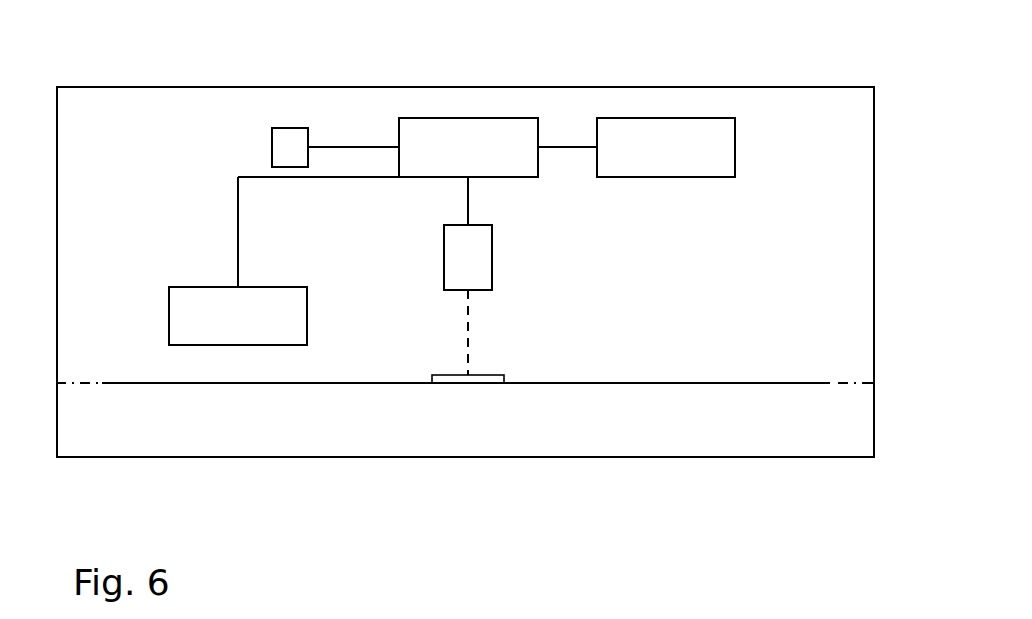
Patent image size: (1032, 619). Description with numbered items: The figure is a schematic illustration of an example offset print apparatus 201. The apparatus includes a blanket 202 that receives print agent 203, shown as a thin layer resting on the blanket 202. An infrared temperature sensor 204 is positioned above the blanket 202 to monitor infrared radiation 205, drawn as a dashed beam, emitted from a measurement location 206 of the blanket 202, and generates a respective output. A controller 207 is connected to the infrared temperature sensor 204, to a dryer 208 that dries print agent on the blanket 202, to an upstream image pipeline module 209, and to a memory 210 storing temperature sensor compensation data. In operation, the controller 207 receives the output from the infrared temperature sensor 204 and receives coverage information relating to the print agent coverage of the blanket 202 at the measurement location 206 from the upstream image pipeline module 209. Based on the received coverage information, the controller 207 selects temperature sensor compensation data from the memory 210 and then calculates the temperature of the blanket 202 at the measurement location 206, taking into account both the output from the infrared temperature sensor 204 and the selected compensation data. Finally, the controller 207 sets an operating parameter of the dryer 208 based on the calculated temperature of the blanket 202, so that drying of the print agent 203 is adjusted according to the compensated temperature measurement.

The offset print apparatus 201 is at (678, 87).
The blanket 202 is at (640, 383).
The print agent 203 is at (502, 375).
The infrared temperature sensor 204 is at (493, 256).
The infrared radiation 205 is at (450, 332).
The measurement location 206 is at (483, 402).
The controller 207 is at (435, 118).
The dryer 208 is at (205, 287).
The upstream image pipeline module 209 is at (735, 167).
The memory 210 is at (272, 155).